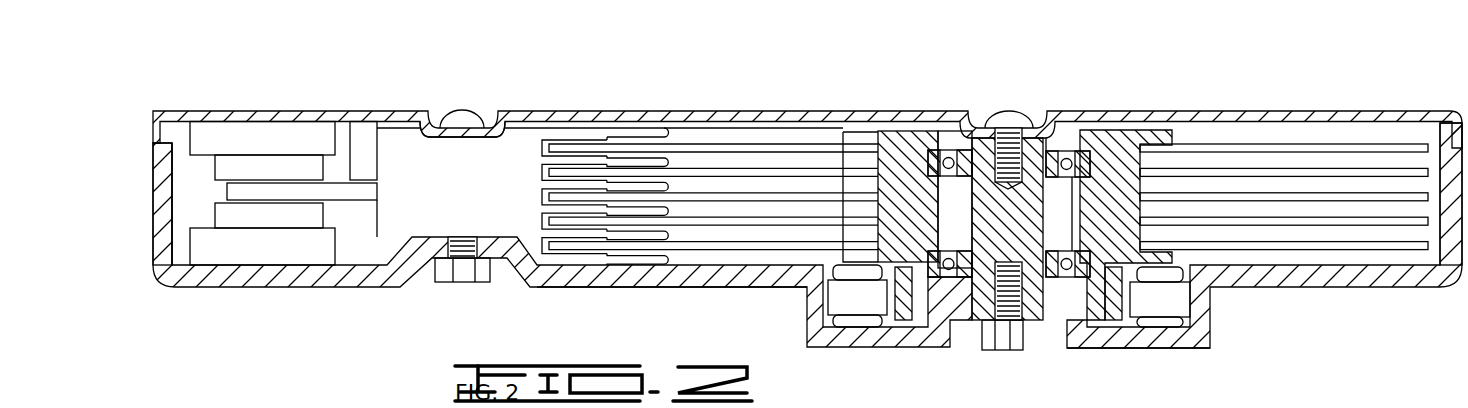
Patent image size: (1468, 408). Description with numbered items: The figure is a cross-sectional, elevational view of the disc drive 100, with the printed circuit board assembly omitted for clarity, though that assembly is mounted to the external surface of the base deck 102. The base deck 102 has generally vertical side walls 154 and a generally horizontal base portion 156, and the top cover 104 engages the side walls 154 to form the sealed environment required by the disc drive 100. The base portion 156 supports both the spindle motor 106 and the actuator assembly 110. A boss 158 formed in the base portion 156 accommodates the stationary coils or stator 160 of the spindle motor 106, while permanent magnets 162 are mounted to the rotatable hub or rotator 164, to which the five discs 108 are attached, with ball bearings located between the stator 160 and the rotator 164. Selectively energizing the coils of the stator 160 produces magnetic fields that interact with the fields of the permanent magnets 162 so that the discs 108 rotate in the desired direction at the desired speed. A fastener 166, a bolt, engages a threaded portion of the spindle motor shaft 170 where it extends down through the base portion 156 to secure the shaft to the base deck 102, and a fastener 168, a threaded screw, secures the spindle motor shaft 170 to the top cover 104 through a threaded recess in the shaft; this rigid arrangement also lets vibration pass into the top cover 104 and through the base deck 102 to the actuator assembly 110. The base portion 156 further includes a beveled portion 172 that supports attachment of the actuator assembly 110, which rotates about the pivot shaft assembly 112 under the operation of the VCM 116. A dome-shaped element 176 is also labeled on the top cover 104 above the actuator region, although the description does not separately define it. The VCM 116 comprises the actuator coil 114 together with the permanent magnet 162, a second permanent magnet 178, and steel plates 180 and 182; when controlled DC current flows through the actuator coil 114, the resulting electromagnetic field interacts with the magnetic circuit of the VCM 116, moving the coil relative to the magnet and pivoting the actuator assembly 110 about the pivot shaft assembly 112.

The disc drive 100 is at (807, 184).
The base deck 102 is at (270, 289).
The top cover 104 is at (742, 111).
The spindle motor 106 is at (1112, 153).
The discs 108 is at (1365, 155).
The actuator assembly 110 is at (427, 198).
The pivot shaft assembly 112 is at (442, 100).
The actuator coil 114 is at (352, 140).
The VCM 116 is at (190, 183).
The side walls 154 is at (147, 246).
The base portion 156 is at (640, 287).
The boss 158 is at (1140, 353).
The stator 160 is at (850, 300).
The permanent magnets 162 is at (218, 247).
The rotator 164 is at (923, 143).
The fastener 166 is at (1012, 333).
The fastener 168 is at (1008, 120).
The spindle motor shaft 170 is at (1025, 352).
The beveled portion 172 is at (517, 275).
The dome head 176 is at (467, 113).
The second permanent magnet 178 is at (248, 170).
The steel plate 180 is at (303, 143).
The steel plate 182 is at (233, 218).